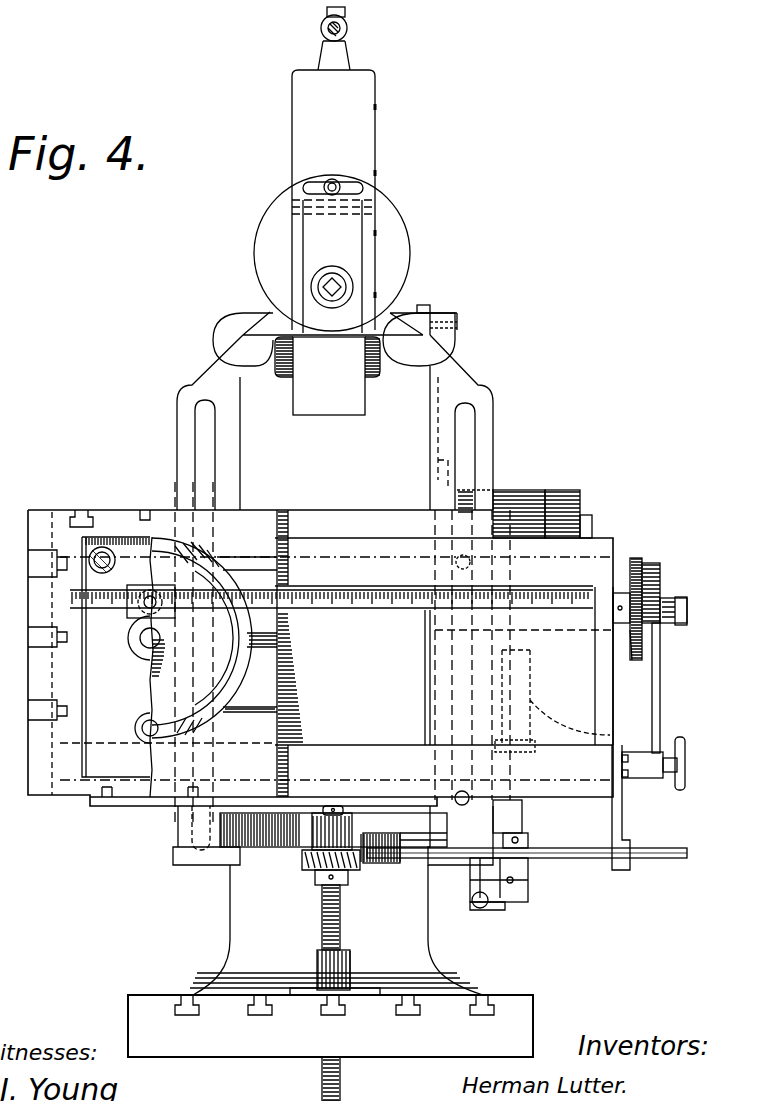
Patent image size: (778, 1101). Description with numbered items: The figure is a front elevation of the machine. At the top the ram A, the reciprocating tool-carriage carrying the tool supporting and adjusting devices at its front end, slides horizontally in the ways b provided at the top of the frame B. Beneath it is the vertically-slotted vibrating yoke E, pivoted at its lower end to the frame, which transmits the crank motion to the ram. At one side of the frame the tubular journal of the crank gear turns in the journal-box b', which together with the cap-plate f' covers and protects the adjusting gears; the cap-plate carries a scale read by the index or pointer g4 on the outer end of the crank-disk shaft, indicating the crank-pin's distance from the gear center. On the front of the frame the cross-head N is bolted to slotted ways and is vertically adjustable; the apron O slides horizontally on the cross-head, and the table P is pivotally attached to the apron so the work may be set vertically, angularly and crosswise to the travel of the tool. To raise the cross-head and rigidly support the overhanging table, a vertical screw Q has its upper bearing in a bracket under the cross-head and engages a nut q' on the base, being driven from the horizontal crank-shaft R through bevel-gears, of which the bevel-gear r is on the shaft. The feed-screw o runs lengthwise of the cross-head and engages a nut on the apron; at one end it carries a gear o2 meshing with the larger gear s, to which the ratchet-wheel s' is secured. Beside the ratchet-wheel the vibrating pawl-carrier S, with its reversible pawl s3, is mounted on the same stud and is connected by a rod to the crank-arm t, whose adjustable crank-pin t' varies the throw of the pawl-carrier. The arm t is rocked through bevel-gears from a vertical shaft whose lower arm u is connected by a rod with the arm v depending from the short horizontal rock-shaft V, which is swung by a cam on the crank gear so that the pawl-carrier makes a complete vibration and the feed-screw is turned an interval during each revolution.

The ram A is at (273, 322).
The ways b is at (334, 339).
The vibrating yoke E is at (362, 366).
The frame B is at (330, 718).
The apron O is at (165, 503).
The table P is at (179, 667).
The feed-screw o is at (306, 610).
The cross-head N is at (444, 657).
The journal-box b' is at (501, 499).
The cap-plate f' is at (562, 499).
The index or pointer g4 is at (592, 514).
The vibrating pawl-carrier S is at (664, 586).
The gear s is at (636, 595).
The reversible pawl s3 is at (649, 563).
The ratchet-wheel s' is at (669, 688).
The gear o2 is at (632, 632).
The crank-arm t is at (649, 748).
The adjustable crank-pin t' is at (693, 763).
The crank-shaft R is at (578, 858).
The rock-shaft V is at (522, 815).
The arm v is at (470, 882).
The arm u is at (487, 908).
The bevel-gear r is at (370, 858).
The nut q' is at (333, 898).
The vertical screw Q is at (322, 927).